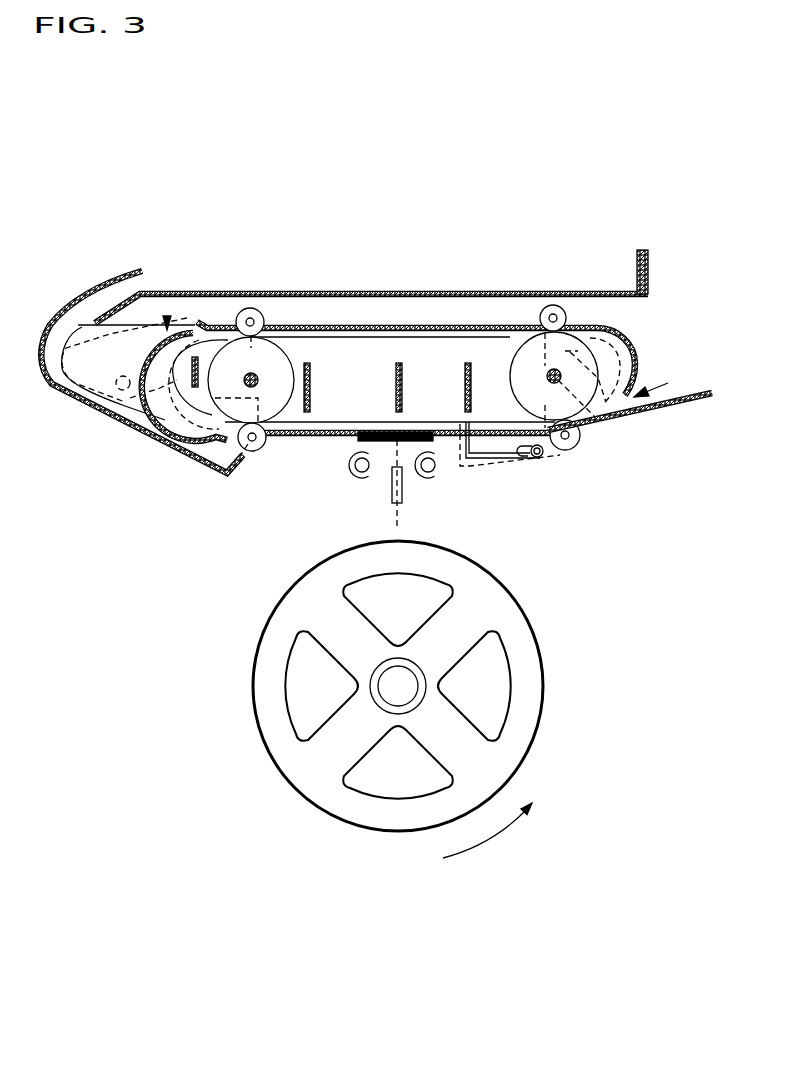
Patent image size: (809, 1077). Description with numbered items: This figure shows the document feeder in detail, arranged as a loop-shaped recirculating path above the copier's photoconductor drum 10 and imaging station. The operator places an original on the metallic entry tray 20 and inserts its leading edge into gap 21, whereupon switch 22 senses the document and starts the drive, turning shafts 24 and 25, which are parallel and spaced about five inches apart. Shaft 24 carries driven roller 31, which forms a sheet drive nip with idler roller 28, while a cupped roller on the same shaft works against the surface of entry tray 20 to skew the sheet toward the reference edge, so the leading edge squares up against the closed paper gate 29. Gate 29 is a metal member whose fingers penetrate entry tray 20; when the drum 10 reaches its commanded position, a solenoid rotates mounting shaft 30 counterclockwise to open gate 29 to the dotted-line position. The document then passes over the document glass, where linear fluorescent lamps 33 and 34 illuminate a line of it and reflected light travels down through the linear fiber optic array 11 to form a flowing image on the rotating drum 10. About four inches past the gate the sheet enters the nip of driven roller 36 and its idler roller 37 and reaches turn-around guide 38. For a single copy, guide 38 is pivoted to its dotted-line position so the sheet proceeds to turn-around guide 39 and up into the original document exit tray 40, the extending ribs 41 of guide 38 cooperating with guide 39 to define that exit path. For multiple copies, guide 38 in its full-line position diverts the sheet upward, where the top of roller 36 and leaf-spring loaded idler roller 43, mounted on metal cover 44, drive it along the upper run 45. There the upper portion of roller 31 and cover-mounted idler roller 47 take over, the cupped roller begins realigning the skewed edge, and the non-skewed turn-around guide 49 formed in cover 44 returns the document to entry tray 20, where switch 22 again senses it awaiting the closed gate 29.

The photoconductor drum 10 is at (541, 652).
The linear fiber optic array 11 is at (392, 490).
The entry tray 20 is at (683, 402).
The gap 21 is at (668, 383).
The switch 22 is at (592, 342).
The shaft 24 is at (558, 372).
The shaft 25 is at (256, 374).
The idler roller 28 is at (578, 442).
The paper gate 29 is at (495, 458).
The mounting shaft 30 is at (538, 458).
The driven roller 31 is at (545, 406).
The linear fluorescent lamp 33 is at (354, 464).
The linear fluorescent lamp 34 is at (436, 468).
The driven roller 36 is at (281, 370).
The idler roller 37 is at (254, 450).
The turn-around guide 38 is at (167, 316).
The turn-around guide 39 is at (57, 293).
The original document exit tray 40 is at (587, 291).
The extending ribs 41 is at (83, 343).
The idler roller 43 is at (249, 309).
The metal cover 44 is at (524, 327).
The upper run 45 is at (471, 337).
The idler roller 47 is at (560, 314).
The turn-around guide 49 is at (638, 366).